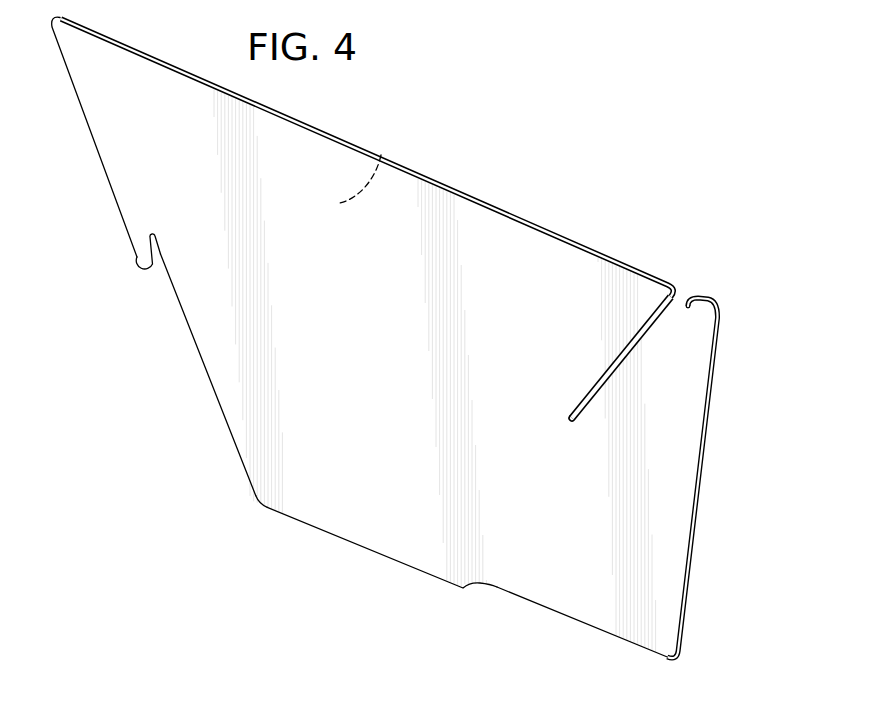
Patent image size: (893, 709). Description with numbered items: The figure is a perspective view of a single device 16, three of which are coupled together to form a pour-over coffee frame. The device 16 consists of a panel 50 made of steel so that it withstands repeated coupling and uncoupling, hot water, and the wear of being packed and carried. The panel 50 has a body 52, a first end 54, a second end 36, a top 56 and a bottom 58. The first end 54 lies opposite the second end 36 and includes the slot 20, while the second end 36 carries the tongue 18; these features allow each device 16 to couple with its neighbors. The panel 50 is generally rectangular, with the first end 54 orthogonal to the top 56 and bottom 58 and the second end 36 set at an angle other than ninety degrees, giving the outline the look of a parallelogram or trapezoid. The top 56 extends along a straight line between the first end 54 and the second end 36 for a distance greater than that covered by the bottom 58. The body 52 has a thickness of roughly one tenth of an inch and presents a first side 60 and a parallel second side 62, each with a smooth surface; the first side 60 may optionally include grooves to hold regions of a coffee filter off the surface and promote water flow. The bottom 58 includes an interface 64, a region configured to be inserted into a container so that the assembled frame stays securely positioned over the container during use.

The device 16 is at (407, 337).
The tongue 18 is at (137, 260).
The slot 20 is at (600, 382).
The second end 36 is at (208, 380).
The panel 50 is at (403, 563).
The body 52 is at (297, 153).
The first end 54 is at (704, 442).
The top 56 is at (450, 190).
The bottom 58 is at (312, 523).
The first side 60 is at (377, 354).
The second side 62 is at (381, 155).
The interface 64 is at (292, 490).